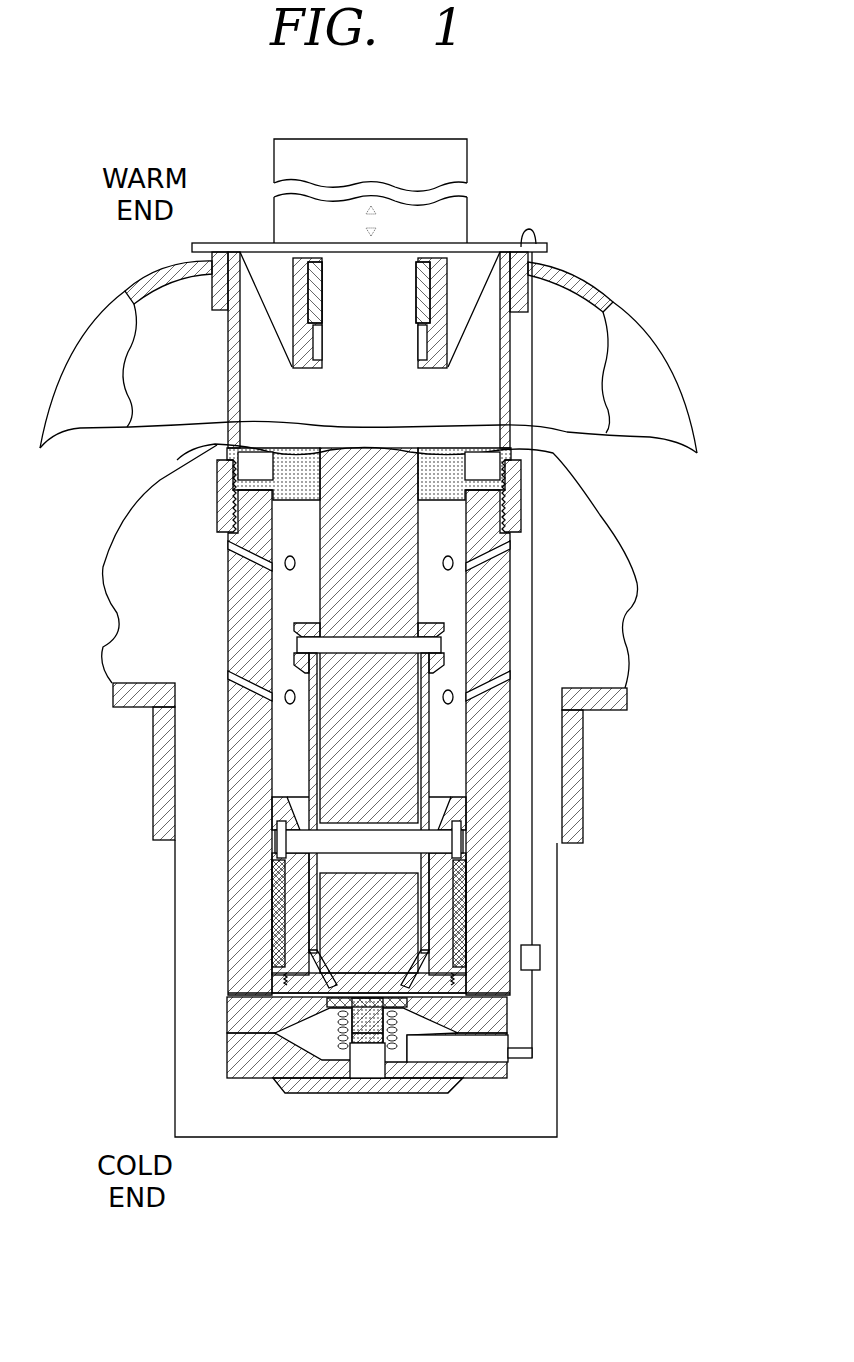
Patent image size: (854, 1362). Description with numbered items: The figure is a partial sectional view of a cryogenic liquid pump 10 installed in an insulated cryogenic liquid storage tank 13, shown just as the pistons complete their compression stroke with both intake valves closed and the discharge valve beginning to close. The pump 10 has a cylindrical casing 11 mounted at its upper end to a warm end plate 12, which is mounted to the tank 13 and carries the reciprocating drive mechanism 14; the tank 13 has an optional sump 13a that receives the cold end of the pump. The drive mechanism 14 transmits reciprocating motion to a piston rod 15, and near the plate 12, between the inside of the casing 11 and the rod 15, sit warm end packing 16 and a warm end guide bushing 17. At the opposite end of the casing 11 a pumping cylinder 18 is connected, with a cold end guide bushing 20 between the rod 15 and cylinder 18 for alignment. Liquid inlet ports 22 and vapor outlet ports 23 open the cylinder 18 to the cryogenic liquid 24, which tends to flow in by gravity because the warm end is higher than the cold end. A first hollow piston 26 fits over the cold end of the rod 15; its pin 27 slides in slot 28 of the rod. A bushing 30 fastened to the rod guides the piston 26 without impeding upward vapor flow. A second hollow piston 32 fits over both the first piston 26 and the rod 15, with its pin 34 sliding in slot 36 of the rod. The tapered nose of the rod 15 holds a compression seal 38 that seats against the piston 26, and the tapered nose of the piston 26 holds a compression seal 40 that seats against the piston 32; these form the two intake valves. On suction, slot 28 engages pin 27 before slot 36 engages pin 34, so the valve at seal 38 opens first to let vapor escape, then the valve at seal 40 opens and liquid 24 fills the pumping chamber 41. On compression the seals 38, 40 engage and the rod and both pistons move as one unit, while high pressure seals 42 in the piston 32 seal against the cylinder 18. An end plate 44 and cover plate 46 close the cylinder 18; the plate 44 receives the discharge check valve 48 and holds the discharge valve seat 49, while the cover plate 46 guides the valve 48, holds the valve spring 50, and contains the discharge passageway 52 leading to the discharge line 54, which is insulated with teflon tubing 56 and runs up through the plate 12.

The pump 10 is at (467, 210).
The cylindrical casing 11 is at (512, 352).
The warm end plate 12 is at (487, 243).
The cryogenic liquid storage tank 13 is at (640, 322).
The sump 13a is at (585, 790).
The reciprocating drive mechanism 14 is at (470, 152).
The piston rod 15 is at (420, 412).
The warm end packing 16 is at (450, 290).
The warm end guide bushing 17 is at (450, 362).
The pumping cylinder 18 is at (585, 812).
The cold end guide bushing 20 is at (560, 455).
The liquid inlet ports 22 is at (627, 710).
The vapor outlet ports 23 is at (585, 565).
The cryogenic liquid 24 is at (349, 674).
The first piston 26 is at (585, 752).
The pin 27 is at (310, 628).
The slot 28 is at (153, 770).
The bushing 30 is at (437, 867).
The second piston 32 is at (467, 795).
The pin 34 is at (225, 838).
The slot 36 is at (226, 937).
The compression seal 38 is at (425, 1095).
The compression seal 40 is at (228, 977).
The pumping chamber 41 is at (510, 1020).
The high pressure seals 42 is at (470, 905).
The end plate 44 is at (510, 1055).
The cover plate 46 is at (557, 1137).
The discharge check valve 48 is at (358, 1095).
The discharge valve seat 49 is at (228, 1000).
The valve spring 50 is at (112, 1082).
The discharge passageway 52 is at (510, 1078).
The discharge line 54 is at (540, 235).
The teflon tubing 56 is at (545, 960).